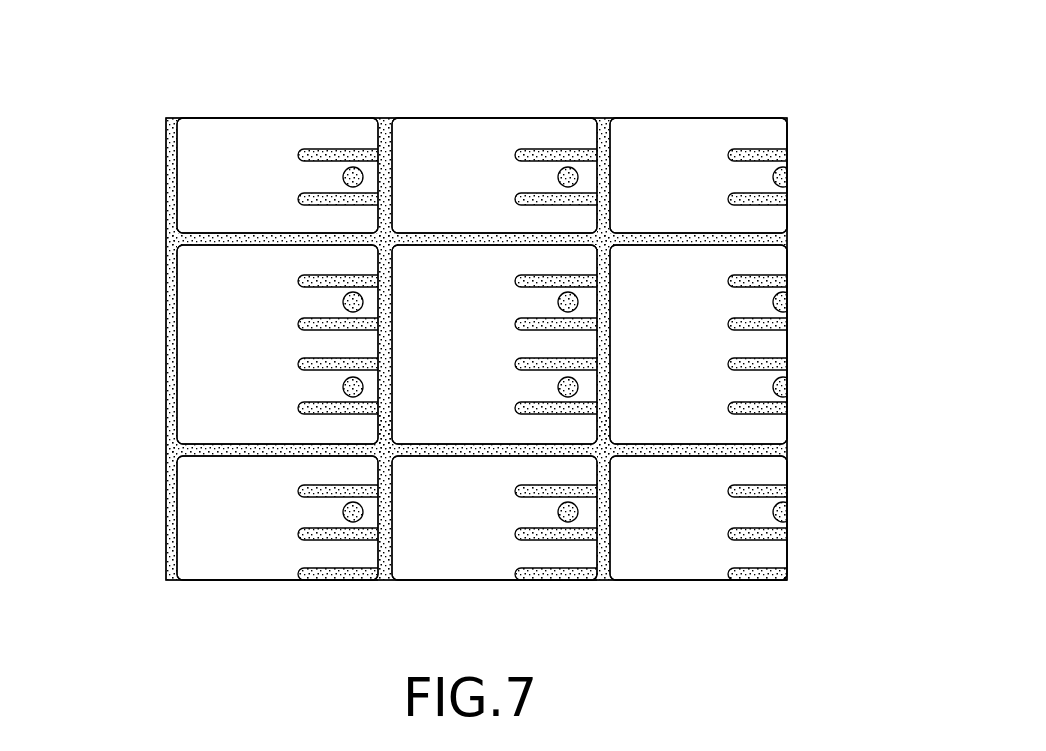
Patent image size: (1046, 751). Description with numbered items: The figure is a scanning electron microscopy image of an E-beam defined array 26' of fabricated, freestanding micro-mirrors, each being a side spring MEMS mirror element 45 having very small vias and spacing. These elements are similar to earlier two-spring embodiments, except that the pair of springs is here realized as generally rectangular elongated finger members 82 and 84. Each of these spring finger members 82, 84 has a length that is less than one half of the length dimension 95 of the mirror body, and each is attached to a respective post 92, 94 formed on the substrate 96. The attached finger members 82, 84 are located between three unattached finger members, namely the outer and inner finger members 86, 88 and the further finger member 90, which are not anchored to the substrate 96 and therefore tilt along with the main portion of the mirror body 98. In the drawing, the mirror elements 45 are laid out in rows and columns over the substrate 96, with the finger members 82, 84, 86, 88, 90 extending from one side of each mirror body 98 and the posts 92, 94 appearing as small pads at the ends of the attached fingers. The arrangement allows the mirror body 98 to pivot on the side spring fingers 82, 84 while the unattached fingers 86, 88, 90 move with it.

The E-beam defined array 26' is at (395, 349).
The side spring MEMS mirror element 45 is at (738, 112).
The finger member 82 is at (380, 310).
The finger member 84 is at (380, 392).
The outer finger member 86 is at (380, 262).
The inner finger member 88 is at (380, 347).
The finger member 90 is at (288, 428).
The post 92 is at (343, 302).
The post 94 is at (342, 178).
The length dimension 95 is at (488, 118).
The substrate 96 is at (172, 265).
The mirror body 98 is at (280, 130).